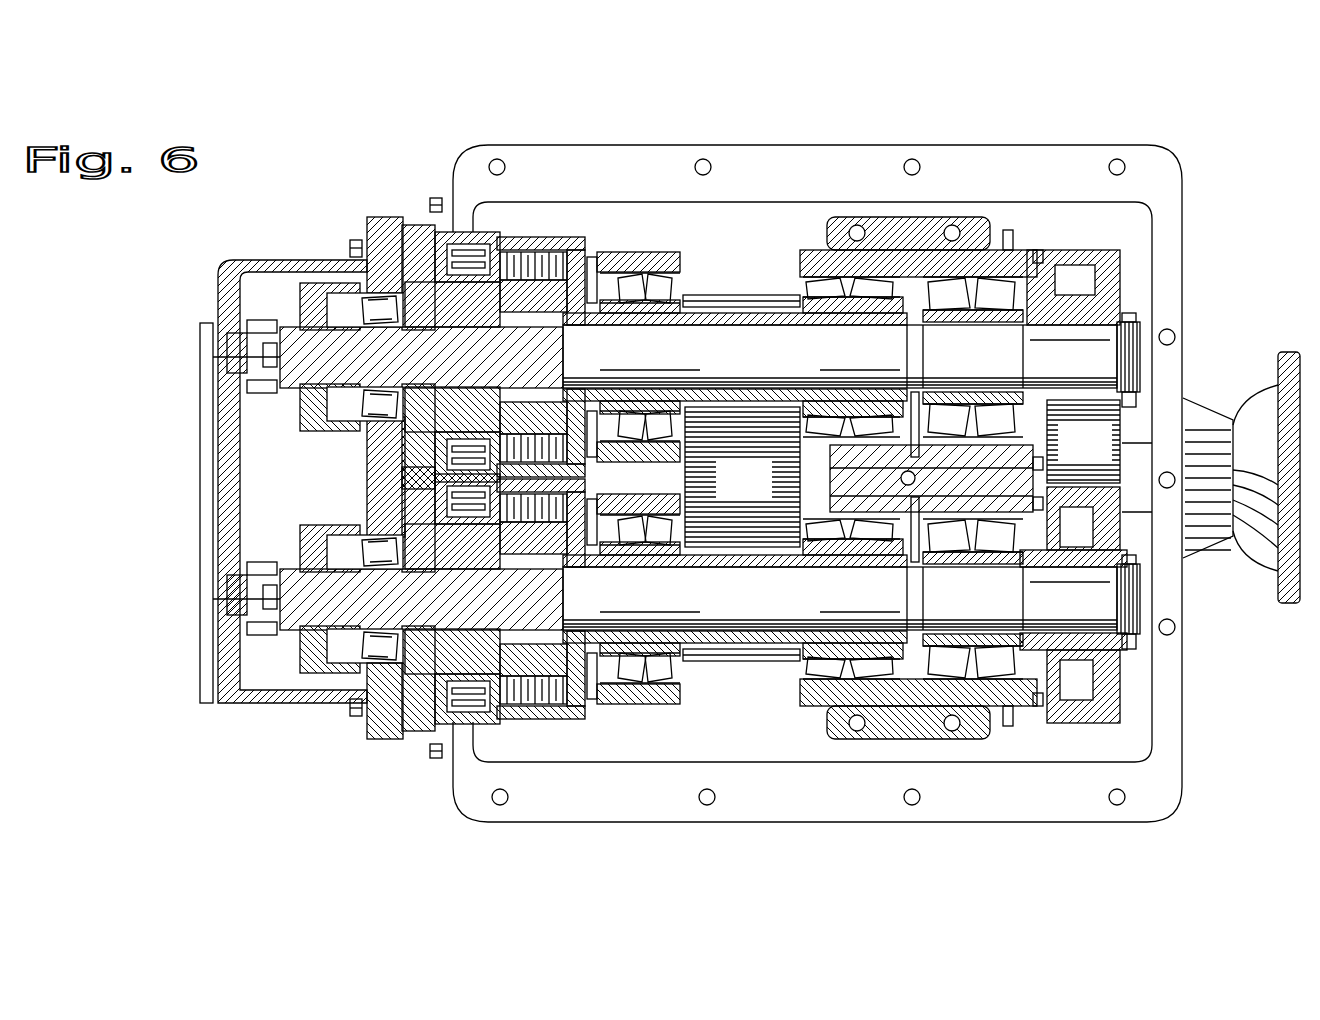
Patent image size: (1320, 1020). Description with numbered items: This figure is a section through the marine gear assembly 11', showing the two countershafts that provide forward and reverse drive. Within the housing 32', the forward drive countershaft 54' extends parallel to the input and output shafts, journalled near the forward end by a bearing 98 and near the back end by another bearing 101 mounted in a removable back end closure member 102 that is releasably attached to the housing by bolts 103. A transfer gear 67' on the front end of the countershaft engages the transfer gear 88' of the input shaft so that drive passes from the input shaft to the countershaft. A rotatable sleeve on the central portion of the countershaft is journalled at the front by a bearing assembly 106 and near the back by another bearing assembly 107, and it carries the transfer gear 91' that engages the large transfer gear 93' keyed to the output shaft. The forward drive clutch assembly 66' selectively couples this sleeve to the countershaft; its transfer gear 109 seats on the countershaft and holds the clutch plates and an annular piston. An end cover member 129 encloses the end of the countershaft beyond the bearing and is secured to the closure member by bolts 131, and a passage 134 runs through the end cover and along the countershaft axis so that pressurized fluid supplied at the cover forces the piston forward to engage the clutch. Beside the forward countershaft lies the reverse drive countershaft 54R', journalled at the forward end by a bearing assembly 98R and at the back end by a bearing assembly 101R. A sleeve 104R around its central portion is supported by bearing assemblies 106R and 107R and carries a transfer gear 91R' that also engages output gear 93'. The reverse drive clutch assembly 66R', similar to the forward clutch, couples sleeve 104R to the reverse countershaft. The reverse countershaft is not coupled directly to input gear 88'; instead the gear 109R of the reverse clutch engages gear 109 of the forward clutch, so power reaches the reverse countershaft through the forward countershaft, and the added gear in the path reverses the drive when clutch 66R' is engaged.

The marine gear assembly 11' is at (880, 453).
The housing 32' is at (1235, 551).
The forward drive countershaft 54' is at (710, 602).
The reverse drive countershaft 54R' is at (676, 360).
The forward drive clutch assembly 66' is at (547, 678).
The reverse drive clutch assembly 66R' is at (547, 285).
The transfer gear 67' is at (1136, 605).
The transfer gear 88' is at (1083, 441).
The transfer gear 91' is at (735, 634).
The transfer gear 91R' is at (735, 324).
The transfer gear 93' is at (742, 477).
The bearing 98 is at (971, 674).
The bearing assembly 98R is at (973, 281).
The bearing 101 is at (360, 655).
The bearing assembly 101R is at (384, 286).
The back end closure member 102 is at (377, 730).
The bolts 103 is at (428, 204).
The sleeve 104R is at (697, 311).
The bearing assembly 106 is at (844, 682).
The bearing assembly 106R is at (847, 274).
The bearing assembly 107 is at (646, 682).
The bearing assembly 107R is at (647, 274).
The transfer gear 109 is at (440, 724).
The gear 109R is at (450, 230).
The end cover member 129 is at (204, 425).
The bolts 131 is at (350, 712).
The passage 134 is at (213, 578).